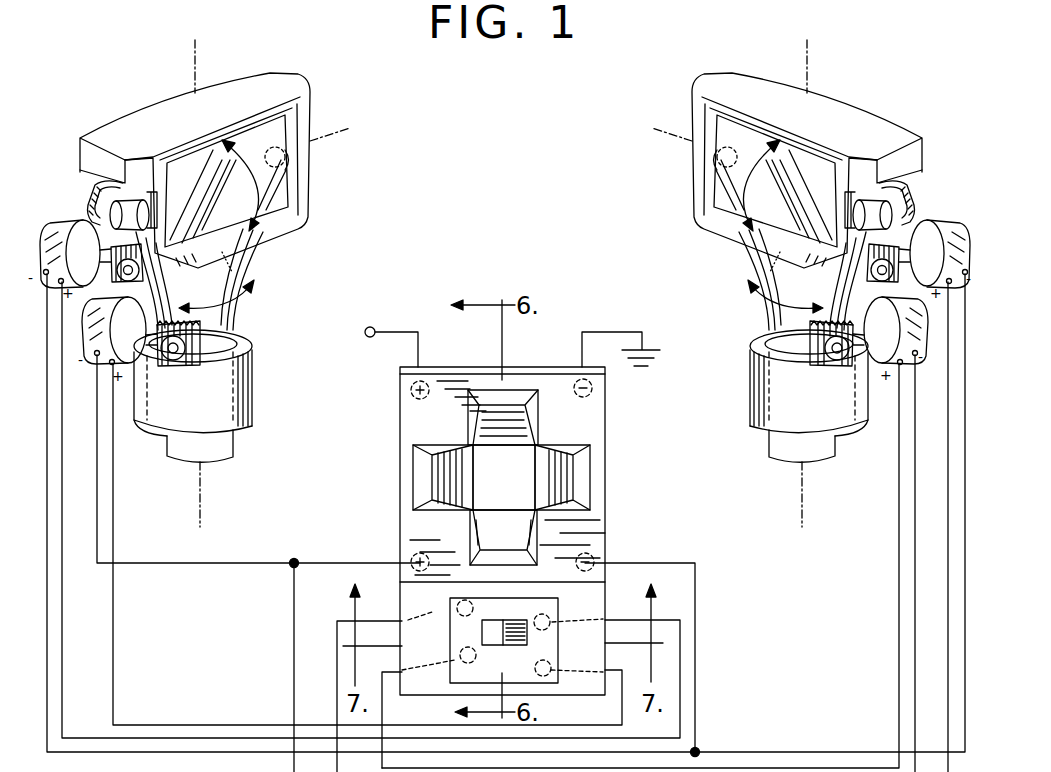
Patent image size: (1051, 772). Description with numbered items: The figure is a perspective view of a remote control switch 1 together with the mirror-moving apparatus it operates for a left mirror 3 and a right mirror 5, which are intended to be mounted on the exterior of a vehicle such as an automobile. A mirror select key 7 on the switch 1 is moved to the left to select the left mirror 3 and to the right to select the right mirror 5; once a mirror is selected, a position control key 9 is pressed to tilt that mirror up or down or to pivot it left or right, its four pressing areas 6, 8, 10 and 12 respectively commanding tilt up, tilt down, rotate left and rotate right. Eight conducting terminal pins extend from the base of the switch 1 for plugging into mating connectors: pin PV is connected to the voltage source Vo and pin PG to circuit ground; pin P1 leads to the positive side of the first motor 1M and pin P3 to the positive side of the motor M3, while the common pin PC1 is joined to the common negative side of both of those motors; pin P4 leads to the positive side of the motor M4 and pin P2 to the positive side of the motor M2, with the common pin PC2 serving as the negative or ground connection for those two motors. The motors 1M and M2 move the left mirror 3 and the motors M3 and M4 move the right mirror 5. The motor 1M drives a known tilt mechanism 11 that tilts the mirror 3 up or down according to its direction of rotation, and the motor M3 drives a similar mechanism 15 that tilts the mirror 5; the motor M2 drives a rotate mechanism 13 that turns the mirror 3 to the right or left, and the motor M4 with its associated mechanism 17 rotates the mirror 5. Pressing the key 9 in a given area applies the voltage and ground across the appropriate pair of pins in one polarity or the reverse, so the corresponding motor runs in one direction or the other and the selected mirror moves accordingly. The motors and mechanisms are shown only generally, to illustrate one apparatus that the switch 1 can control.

The remote control switch 1 is at (446, 367).
The first motor 1M is at (63, 224).
The left mirror 3 is at (279, 188).
The right mirror 5 is at (727, 186).
The area of position control key 6 is at (510, 410).
The mirror select key 7 is at (495, 635).
The area of position control key 8 is at (493, 530).
The position control key 9 is at (515, 466).
The area of position control key 10 is at (437, 481).
The tilt mechanism 11 is at (133, 190).
The area of position control key 12 is at (570, 479).
The rotate mechanism 13 is at (207, 340).
The tilt mechanism 15 is at (873, 197).
The rotate mechanism 17 is at (807, 340).
The motor M2 is at (130, 364).
The motor M3 is at (944, 222).
The motor M4 is at (876, 355).
The voltage source Vo is at (381, 344).
The conducting pin PV is at (410, 398).
The conducting pin PG is at (598, 394).
The common conducting pin PC1 is at (597, 556).
The common conducting pin PC2 is at (410, 556).
The conducting pin P1 is at (552, 616).
The conducting pin P2 is at (549, 680).
The conducting pin P3 is at (456, 600).
The conducting pin P4 is at (465, 665).